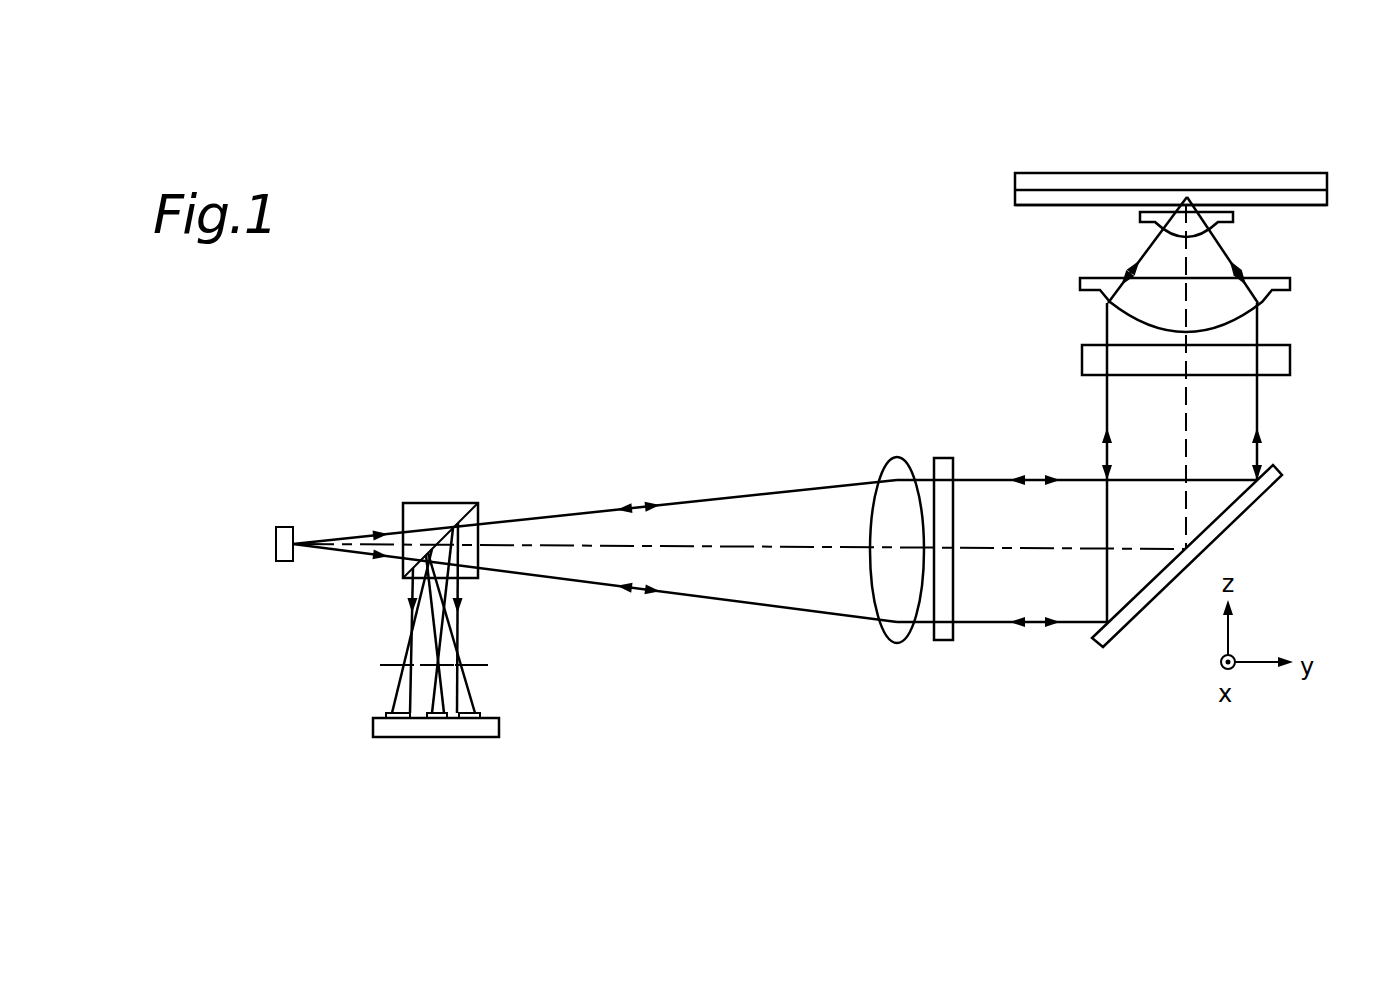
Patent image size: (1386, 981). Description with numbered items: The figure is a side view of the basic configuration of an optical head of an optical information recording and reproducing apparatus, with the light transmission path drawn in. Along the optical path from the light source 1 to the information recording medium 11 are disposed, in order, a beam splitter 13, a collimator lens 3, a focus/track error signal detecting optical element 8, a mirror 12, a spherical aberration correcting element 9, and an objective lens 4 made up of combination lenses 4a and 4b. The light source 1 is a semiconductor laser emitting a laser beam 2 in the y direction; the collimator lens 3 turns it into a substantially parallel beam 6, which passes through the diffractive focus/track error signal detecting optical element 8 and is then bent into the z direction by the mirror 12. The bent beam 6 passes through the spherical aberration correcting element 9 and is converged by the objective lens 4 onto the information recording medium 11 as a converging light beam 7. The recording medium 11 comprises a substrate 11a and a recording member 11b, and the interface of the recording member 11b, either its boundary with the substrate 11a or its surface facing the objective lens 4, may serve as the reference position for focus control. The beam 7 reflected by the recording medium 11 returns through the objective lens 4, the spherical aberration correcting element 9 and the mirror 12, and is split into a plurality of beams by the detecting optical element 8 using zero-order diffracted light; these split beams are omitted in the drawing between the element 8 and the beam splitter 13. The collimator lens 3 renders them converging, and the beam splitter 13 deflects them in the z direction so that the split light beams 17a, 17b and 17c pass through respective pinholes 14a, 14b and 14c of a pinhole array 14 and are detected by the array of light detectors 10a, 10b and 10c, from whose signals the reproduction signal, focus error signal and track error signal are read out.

The light source 1 is at (283, 552).
The laser beam 2 is at (593, 522).
The collimator lens 3 is at (899, 470).
The objective lens 4 is at (1130, 272).
The combination lens 4a is at (1153, 222).
The combination lens 4b is at (1140, 300).
The substantially parallel beam 6 is at (1220, 450).
The converging light beam 7 is at (1195, 255).
The focus/track error signal detecting optical element 8 is at (948, 458).
The spherical aberration correcting element 9 is at (1265, 362).
The light detector 10a is at (434, 738).
The light detector 10b is at (473, 737).
The light detector 10c is at (388, 738).
The information recording medium 11 is at (1063, 200).
The substrate 11a is at (1037, 178).
The recording member 11b is at (1115, 222).
The mirror 12 is at (1212, 532).
The beam splitter 13 is at (438, 515).
The pinhole array 14 is at (327, 708).
The pinhole 14a is at (430, 667).
The pinhole 14b is at (457, 667).
The pinhole 14c is at (407, 666).
The split light beam 17a is at (442, 592).
The split light beam 17b is at (457, 630).
The split light beam 17c is at (415, 620).